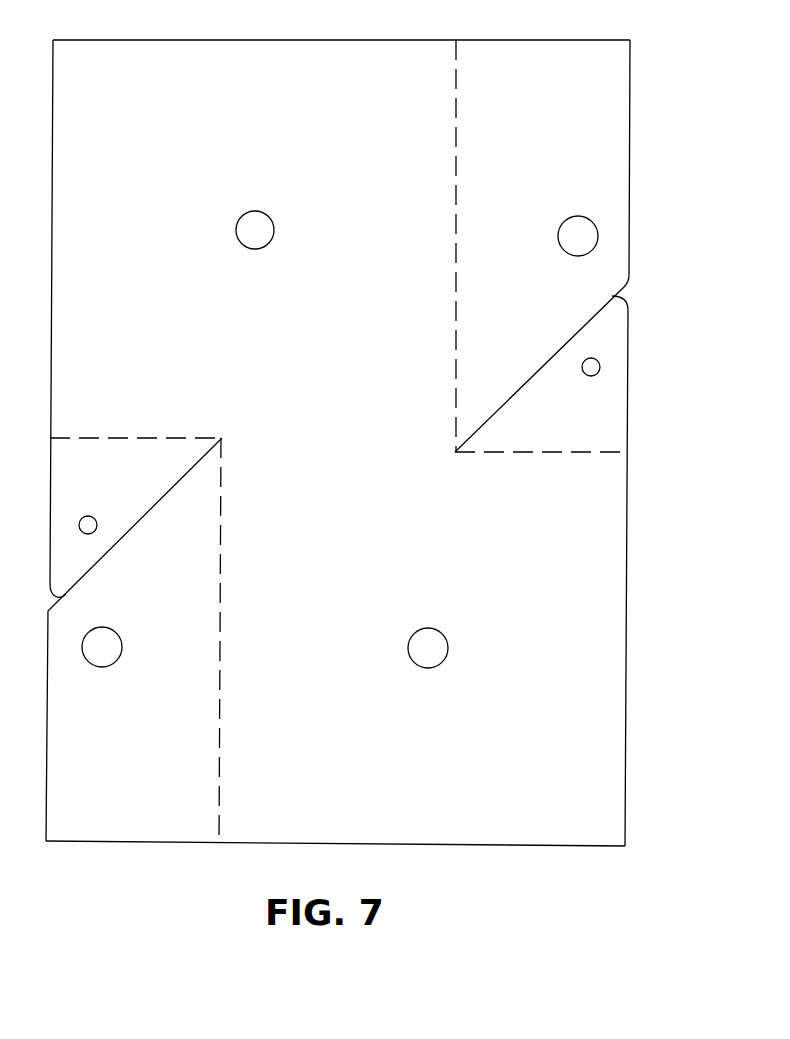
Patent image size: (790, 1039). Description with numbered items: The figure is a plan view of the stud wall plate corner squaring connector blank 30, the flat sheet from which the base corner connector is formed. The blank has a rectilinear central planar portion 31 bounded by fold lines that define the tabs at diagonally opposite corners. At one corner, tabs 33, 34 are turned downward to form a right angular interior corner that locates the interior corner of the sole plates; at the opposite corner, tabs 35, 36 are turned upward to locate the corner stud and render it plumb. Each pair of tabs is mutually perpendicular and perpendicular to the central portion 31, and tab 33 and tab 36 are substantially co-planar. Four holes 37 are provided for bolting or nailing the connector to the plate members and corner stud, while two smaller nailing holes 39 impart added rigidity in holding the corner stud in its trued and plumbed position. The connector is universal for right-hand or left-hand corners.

The stud wall plate corner squaring connector blank 30 is at (642, 774).
The rectilinear central planar portion 31 is at (606, 617).
The downward turned tab 33 is at (143, 457).
The downward turned tab 34 is at (203, 751).
The upward turned tab 35 is at (617, 163).
The upward turned tab 36 is at (571, 443).
The holes 37 is at (258, 222).
The nailing holes 39 is at (90, 525).